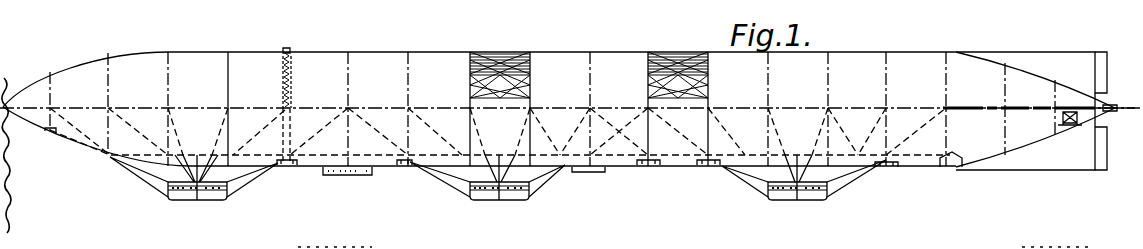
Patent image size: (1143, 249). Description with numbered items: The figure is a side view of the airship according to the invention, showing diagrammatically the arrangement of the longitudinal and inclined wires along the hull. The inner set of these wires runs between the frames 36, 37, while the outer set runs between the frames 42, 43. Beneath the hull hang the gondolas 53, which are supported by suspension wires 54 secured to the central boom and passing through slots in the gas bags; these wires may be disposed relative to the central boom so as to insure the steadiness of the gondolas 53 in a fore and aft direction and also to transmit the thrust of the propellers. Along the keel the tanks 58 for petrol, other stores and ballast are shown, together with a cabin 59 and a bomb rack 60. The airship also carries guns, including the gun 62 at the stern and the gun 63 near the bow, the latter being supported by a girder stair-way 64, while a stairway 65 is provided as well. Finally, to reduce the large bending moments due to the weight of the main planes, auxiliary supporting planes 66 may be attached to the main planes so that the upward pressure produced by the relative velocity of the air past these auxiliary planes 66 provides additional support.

The frame 36 is at (468, 125).
The frame 37 is at (530, 125).
The frame 42 is at (648, 81).
The frame 43 is at (709, 92).
The gondola 53 is at (190, 200).
The suspension wire 54 is at (138, 171).
The tank 58 is at (50, 135).
The cabin 59 is at (333, 176).
The bomb rack 60 is at (600, 173).
The gun 62 is at (1108, 106).
The gun 63 is at (288, 50).
The girder stair-way 64 is at (290, 84).
The stairway 65 is at (290, 121).
The auxiliary supporting plane 66 is at (1072, 125).